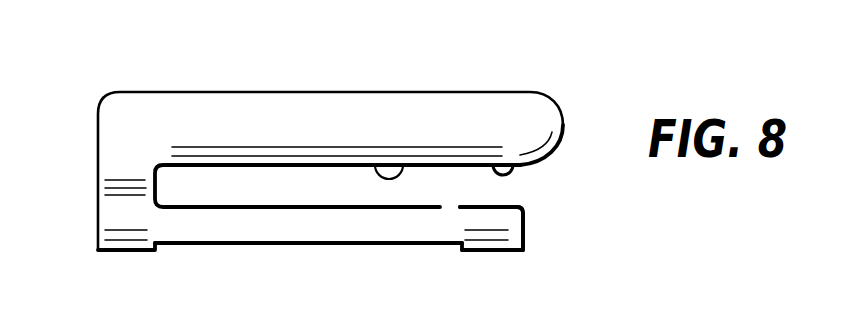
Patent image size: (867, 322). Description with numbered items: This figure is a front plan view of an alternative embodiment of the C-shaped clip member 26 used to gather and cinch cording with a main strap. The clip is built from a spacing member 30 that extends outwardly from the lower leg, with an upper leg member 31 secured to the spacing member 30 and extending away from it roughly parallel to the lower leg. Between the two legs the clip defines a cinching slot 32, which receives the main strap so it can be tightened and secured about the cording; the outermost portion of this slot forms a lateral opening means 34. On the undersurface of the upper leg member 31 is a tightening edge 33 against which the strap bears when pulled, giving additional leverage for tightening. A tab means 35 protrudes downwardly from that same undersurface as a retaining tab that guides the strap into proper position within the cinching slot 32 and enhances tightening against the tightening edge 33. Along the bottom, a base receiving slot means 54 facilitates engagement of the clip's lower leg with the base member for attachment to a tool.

The C-shaped clip member 26 is at (153, 137).
The spacing member 30 is at (113, 203).
The upper leg member 31 is at (344, 131).
The cinching slot 32 is at (344, 198).
The tightening edge 33 is at (406, 168).
The lateral opening means 34 is at (492, 193).
The tab means 35 is at (518, 173).
The base receiving slot means 54 is at (468, 257).